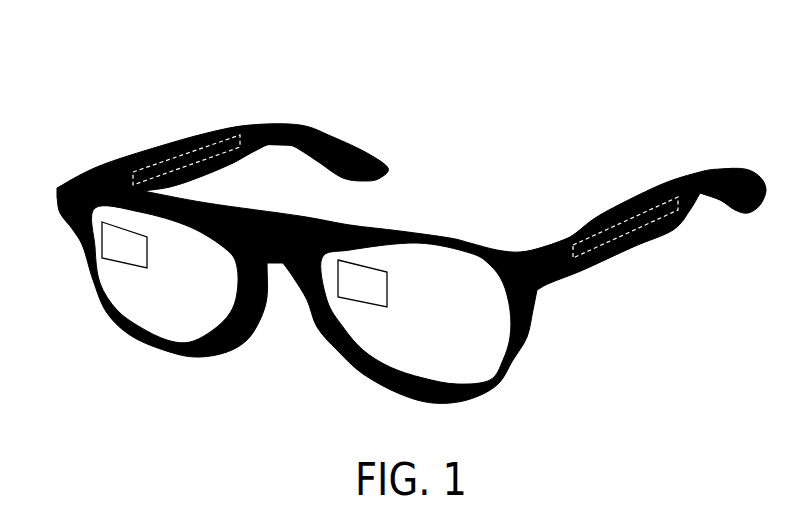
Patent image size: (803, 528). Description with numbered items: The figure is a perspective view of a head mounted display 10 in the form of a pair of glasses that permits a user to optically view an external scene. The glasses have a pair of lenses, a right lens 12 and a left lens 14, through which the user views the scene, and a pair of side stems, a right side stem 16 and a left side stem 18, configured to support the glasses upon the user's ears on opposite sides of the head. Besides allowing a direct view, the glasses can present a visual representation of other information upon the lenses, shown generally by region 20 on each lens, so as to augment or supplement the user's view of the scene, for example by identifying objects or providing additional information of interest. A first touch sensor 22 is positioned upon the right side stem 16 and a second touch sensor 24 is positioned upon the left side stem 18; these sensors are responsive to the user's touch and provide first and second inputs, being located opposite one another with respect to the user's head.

The head mounted display 10 is at (633, 100).
The right lens 12 is at (173, 313).
The left lens 14 is at (350, 370).
The right side stem 16 is at (288, 128).
The left side stem 18 is at (710, 168).
The region 20 is at (115, 262).
The first touch sensor 22 is at (190, 140).
The second touch sensor 24 is at (600, 230).